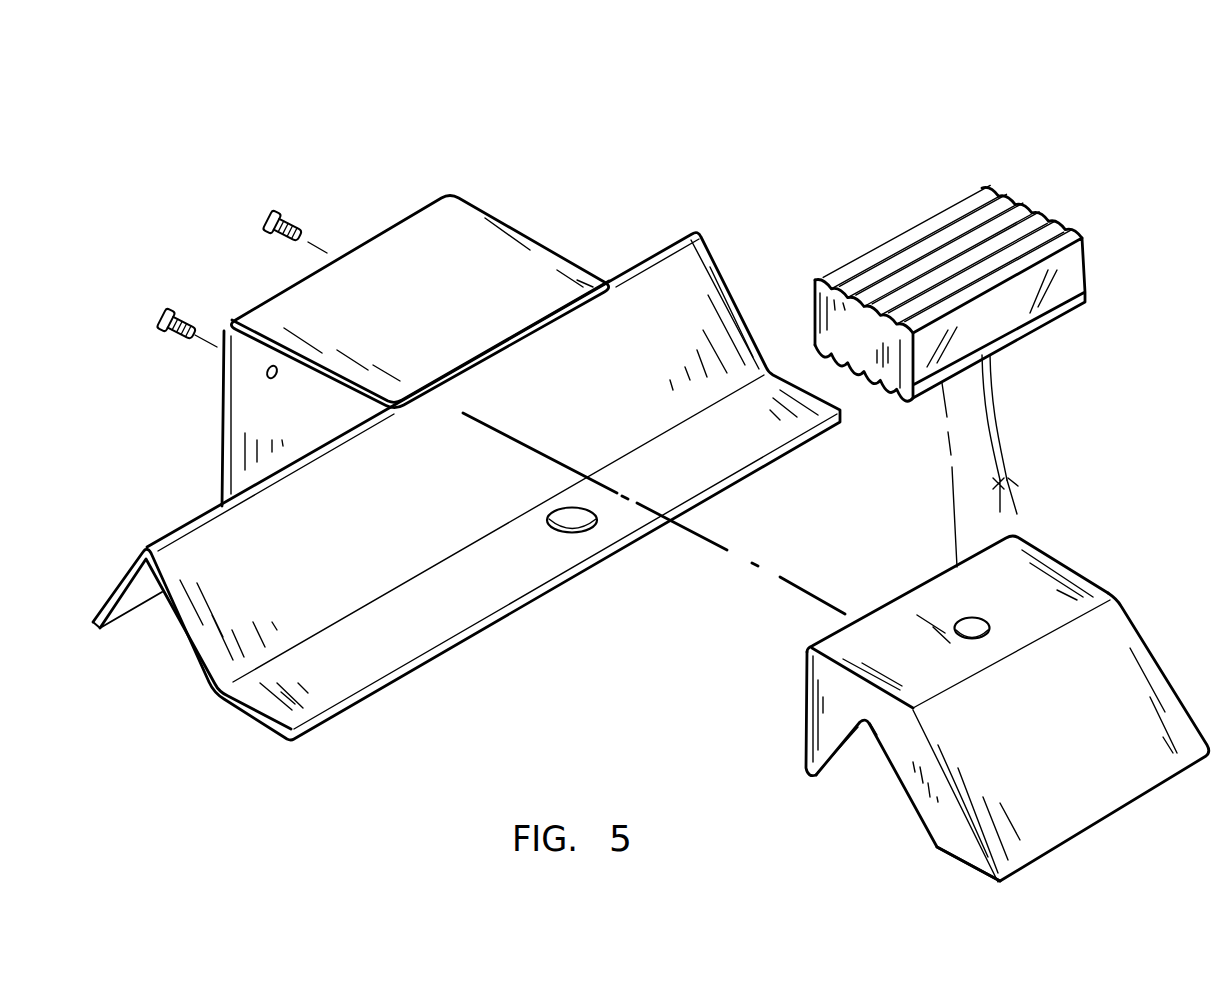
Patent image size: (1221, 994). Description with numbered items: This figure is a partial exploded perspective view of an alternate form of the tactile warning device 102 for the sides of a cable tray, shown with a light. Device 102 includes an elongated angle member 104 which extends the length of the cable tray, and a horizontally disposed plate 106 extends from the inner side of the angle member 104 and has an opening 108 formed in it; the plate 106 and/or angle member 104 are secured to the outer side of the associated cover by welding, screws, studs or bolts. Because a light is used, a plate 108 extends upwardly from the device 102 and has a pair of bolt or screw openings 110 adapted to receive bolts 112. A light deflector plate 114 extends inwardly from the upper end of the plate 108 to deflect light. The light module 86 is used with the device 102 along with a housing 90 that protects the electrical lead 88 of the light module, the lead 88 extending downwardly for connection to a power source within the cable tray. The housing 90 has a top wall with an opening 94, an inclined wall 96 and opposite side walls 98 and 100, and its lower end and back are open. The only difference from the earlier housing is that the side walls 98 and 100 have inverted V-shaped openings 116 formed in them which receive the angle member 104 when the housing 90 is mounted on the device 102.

The light module 86 is at (1040, 211).
The electrical lead 88 is at (1000, 437).
The housing 90 is at (961, 680).
The opening 94 is at (972, 626).
The inclined wall 96 is at (1057, 764).
The side wall 98 is at (825, 725).
The side wall 100 is at (1067, 558).
The tactile warning device 102 is at (704, 231).
The angle member 104 is at (208, 661).
The horizontally disposed plate 106 is at (440, 617).
The opening / upwardly extending plate 108 is at (228, 425).
The bolt or screw openings 110 is at (268, 377).
The bolts 112 is at (188, 322).
The light deflector plate 114 is at (403, 308).
The inverted V-shaped openings 116 is at (843, 766).